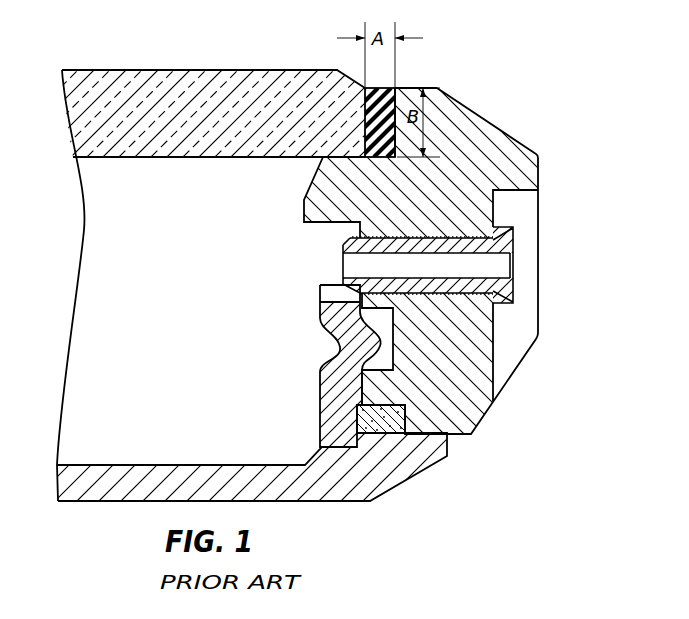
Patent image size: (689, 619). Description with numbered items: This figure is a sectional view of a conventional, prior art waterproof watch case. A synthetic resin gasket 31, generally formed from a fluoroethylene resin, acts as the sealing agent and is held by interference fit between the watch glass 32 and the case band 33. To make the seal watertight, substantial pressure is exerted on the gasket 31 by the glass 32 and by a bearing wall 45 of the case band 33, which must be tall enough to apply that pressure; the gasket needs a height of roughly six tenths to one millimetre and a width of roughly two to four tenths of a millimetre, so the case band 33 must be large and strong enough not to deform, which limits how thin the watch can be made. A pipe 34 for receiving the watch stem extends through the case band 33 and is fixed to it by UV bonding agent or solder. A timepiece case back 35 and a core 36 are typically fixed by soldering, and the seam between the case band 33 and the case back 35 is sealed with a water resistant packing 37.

The synthetic resin gasket 31 is at (377, 118).
The watch glass 32 is at (143, 82).
The case band 33 is at (476, 335).
The pipe 34 is at (505, 240).
The timepiece case back 35 is at (383, 478).
The core 36 is at (340, 400).
The water resistant packing 37 is at (385, 418).
The bearing wall 45 is at (400, 92).